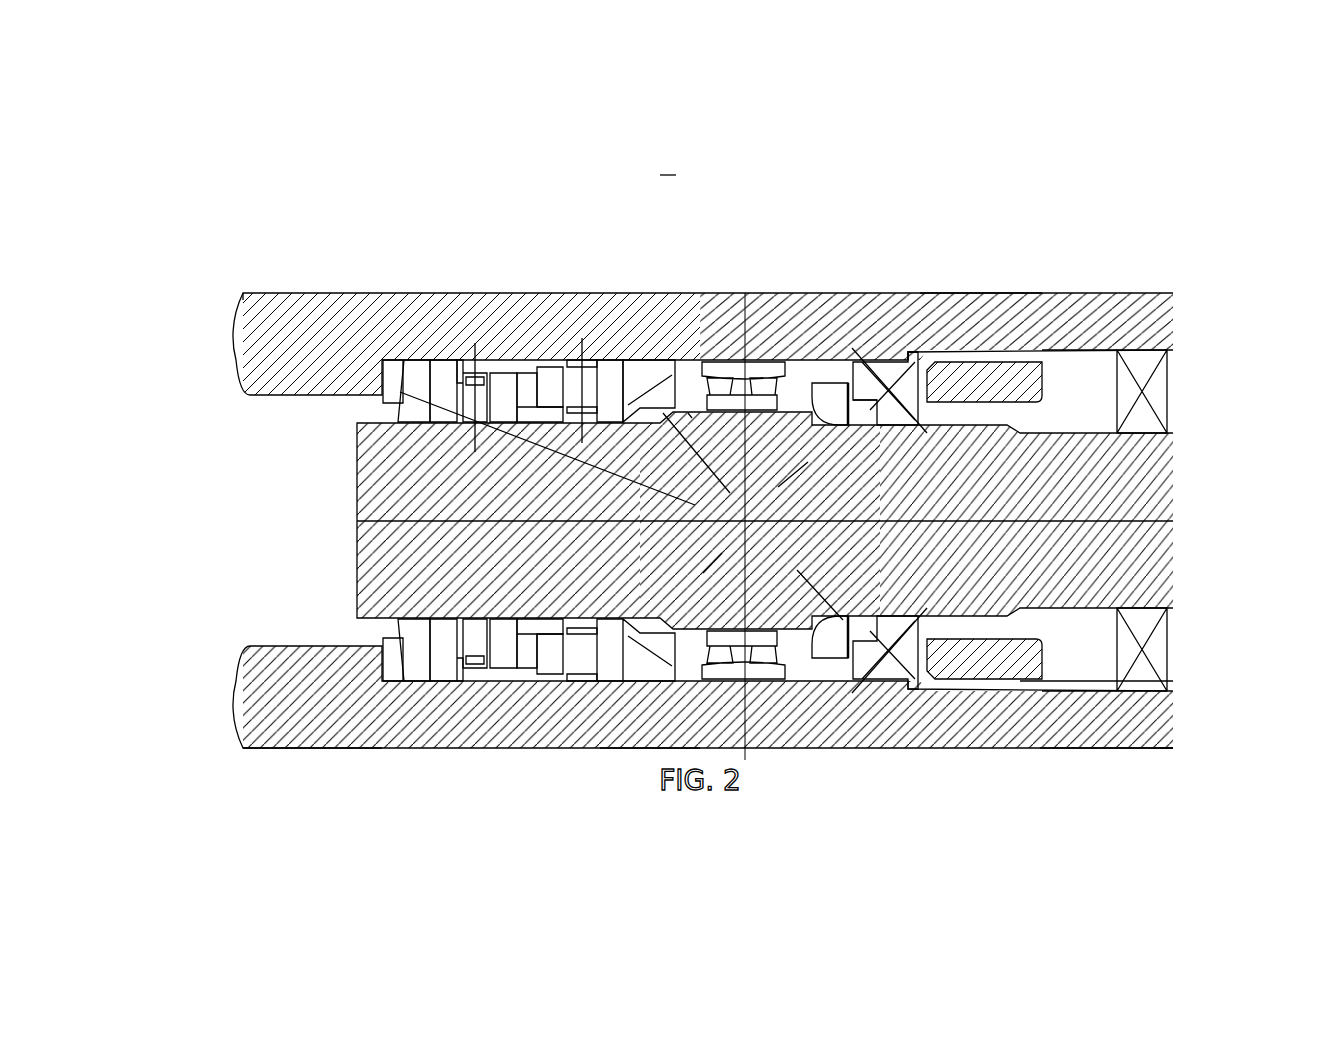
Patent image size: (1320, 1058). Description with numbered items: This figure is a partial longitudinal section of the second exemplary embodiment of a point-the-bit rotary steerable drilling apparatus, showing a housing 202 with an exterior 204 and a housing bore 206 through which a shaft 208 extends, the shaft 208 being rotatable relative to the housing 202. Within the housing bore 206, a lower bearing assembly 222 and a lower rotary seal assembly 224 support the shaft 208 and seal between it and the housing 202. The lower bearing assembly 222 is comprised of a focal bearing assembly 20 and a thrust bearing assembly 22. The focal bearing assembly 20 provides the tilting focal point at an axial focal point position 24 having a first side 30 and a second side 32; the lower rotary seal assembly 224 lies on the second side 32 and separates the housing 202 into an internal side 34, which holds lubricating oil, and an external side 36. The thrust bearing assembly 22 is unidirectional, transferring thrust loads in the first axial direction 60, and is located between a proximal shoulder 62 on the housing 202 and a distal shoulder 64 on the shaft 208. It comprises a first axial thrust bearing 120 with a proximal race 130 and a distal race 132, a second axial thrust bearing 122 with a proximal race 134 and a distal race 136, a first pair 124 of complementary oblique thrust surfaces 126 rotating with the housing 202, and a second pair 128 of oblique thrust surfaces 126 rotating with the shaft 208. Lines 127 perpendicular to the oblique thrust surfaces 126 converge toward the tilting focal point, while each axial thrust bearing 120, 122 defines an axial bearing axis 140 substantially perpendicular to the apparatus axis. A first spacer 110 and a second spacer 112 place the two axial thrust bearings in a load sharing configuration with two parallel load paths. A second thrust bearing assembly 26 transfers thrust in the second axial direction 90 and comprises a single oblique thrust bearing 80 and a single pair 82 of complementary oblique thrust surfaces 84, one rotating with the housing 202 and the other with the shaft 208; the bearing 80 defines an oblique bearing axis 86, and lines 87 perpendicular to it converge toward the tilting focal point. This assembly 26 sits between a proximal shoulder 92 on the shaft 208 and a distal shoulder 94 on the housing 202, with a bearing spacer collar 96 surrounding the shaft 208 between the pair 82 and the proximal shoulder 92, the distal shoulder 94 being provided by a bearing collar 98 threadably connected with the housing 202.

The lower bearing assembly 222 is at (666, 170).
The first axial direction 60 is at (205, 344).
The second axial direction 90 is at (1203, 720).
The proximal shoulder 62 is at (374, 380).
The first pair of complementary oblique thrust surfaces 124 is at (412, 400).
The thrust bearing assembly 22 is at (440, 340).
The proximal race 130 is at (454, 360).
The first spacer 110 is at (500, 395).
The distal race 132 is at (520, 390).
The proximal race 134 is at (555, 395).
The distal race 136 is at (605, 385).
The oblique thrust surfaces 126 is at (625, 395).
The second pair of complementary oblique thrust surfaces 128 is at (650, 385).
The distal shoulder 64 is at (675, 380).
The focal bearing assembly 20 is at (770, 362).
The bearing spacer collar 96 is at (832, 403).
The oblique thrust surfaces 84 is at (885, 380).
The single oblique thrust bearing 80 is at (890, 380).
The second thrust bearing assembly 26 is at (902, 325).
The housing 202 is at (975, 340).
The oblique bearing axis 86 is at (970, 352).
The bearing collar 98 is at (1022, 378).
The lower rotary seal assembly 224 is at (1144, 362).
The external side 36 is at (1170, 375).
The shaft 208 is at (1150, 470).
The lines 87 is at (797, 570).
The axial bearing axis 140 is at (690, 418).
The lines 127 is at (703, 573).
The internal side 34 is at (277, 630).
The first side 30 is at (328, 632).
The first axial thrust bearing 120 is at (468, 648).
The second spacer 112 is at (523, 628).
The second axial thrust bearing 122 is at (578, 658).
The exterior 204 is at (645, 747).
The axial focal point position 24 is at (745, 693).
The proximal shoulder 92 is at (822, 565).
The single pair of complementary oblique thrust surfaces 82 is at (870, 565).
The distal shoulder 94 is at (927, 667).
The second side 32 is at (1063, 678).
The housing bore 206 is at (1097, 653).